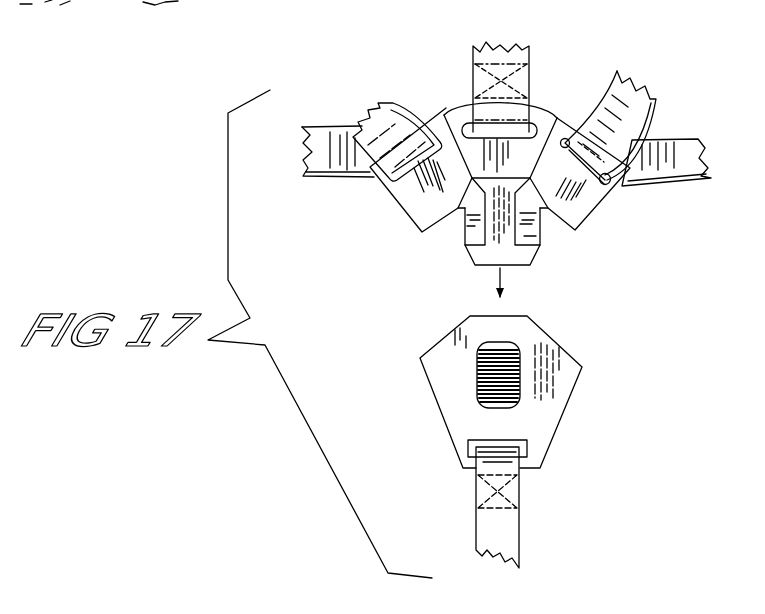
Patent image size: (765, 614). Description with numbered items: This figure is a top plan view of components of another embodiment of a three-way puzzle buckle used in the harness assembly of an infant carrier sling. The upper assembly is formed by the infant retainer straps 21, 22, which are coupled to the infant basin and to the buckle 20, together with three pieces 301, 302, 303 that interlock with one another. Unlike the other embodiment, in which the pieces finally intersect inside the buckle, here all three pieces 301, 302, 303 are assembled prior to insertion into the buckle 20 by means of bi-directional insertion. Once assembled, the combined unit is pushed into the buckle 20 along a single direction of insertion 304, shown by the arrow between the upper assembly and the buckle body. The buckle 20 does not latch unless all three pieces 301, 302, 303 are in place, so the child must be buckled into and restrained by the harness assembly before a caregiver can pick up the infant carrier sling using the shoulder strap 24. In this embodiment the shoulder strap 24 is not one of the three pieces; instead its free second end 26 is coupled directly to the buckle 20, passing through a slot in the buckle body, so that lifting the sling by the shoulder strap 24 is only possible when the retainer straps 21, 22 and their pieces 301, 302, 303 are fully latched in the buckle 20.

The buckle 20 is at (594, 382).
The infant retainer strap 21 is at (342, 118).
The infant retainer strap 22 is at (675, 122).
The shoulder strap 24 is at (539, 533).
The second end 26 is at (537, 437).
The piece 301 is at (461, 236).
The piece 302 is at (490, 253).
The piece 303 is at (541, 237).
The single direction of insertion 304 is at (500, 283).